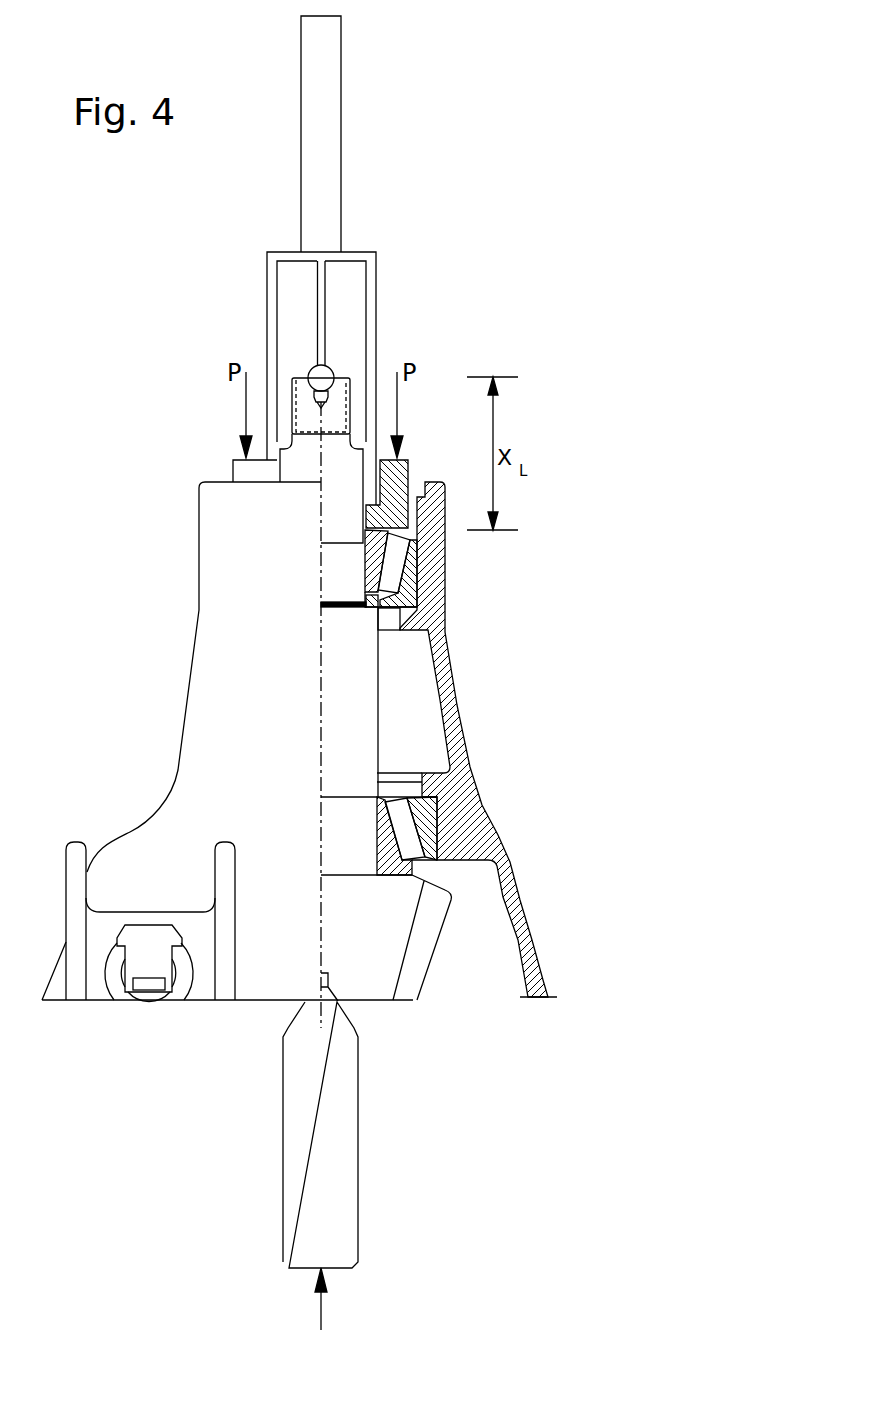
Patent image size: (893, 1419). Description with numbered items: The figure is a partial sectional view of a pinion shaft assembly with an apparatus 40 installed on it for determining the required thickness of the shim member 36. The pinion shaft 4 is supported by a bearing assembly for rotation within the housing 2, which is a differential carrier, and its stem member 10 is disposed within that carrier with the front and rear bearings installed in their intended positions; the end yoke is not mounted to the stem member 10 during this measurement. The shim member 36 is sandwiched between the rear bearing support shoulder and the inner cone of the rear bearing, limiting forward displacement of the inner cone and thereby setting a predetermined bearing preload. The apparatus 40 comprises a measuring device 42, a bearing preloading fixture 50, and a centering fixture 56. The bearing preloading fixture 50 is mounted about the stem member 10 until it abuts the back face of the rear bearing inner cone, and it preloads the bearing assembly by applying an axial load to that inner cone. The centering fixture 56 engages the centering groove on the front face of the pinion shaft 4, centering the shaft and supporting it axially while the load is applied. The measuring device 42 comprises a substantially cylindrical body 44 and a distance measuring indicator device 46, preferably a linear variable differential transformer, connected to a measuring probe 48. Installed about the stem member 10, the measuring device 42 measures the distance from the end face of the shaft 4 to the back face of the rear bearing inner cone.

The housing 2 is at (480, 822).
The pinion shaft 4 is at (390, 724).
The stem member 10 is at (417, 970).
The shim member 36 is at (370, 608).
The apparatus 40 is at (195, 418).
The measuring device 42 is at (384, 264).
The cylindrical body 44 is at (267, 300).
The distance measuring indicator device 46 is at (342, 104).
The measuring probe 48 is at (317, 322).
The bearing preloading fixture 50 is at (418, 460).
The centering fixture 56 is at (360, 1138).